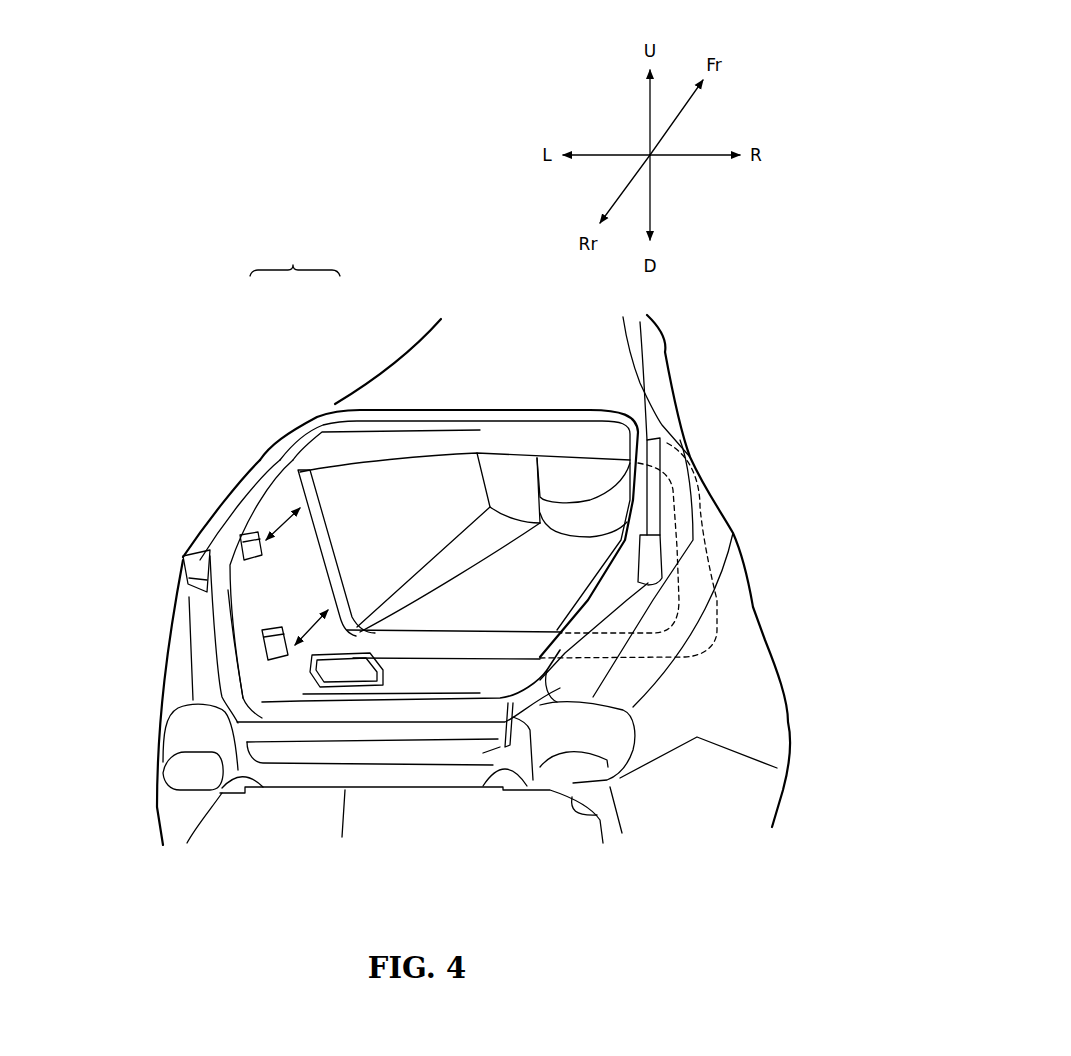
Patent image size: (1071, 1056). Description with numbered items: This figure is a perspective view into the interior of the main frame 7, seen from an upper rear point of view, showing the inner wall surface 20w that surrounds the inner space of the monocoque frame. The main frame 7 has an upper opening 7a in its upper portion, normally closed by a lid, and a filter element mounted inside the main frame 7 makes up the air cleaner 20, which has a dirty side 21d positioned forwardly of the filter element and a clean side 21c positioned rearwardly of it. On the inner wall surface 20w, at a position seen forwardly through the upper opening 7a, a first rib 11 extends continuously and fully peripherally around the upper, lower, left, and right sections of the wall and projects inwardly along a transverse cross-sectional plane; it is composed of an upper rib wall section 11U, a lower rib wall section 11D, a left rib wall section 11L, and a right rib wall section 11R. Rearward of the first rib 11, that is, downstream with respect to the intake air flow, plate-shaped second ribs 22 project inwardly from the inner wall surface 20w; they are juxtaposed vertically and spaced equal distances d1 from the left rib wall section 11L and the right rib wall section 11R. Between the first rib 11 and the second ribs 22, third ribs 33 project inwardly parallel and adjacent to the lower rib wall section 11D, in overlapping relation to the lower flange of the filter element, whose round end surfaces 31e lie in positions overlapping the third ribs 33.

The main frame 7 is at (419, 353).
The upper opening 7a is at (273, 485).
The first rib 11 is at (393, 498).
The upper rib wall section 11U is at (452, 437).
The left rib wall section 11L is at (318, 577).
The right rib wall section 11R is at (640, 551).
The lower rib wall section 11D is at (508, 650).
The air cleaner 20 is at (295, 260).
The inner wall surface 20w is at (268, 533).
The clean side 21c is at (305, 550).
The dirty side 21d is at (336, 545).
The second ribs 22 is at (237, 537).
The round end surfaces 31e is at (363, 648).
The third ribs 33 is at (352, 675).
The distance d1 is at (275, 532).